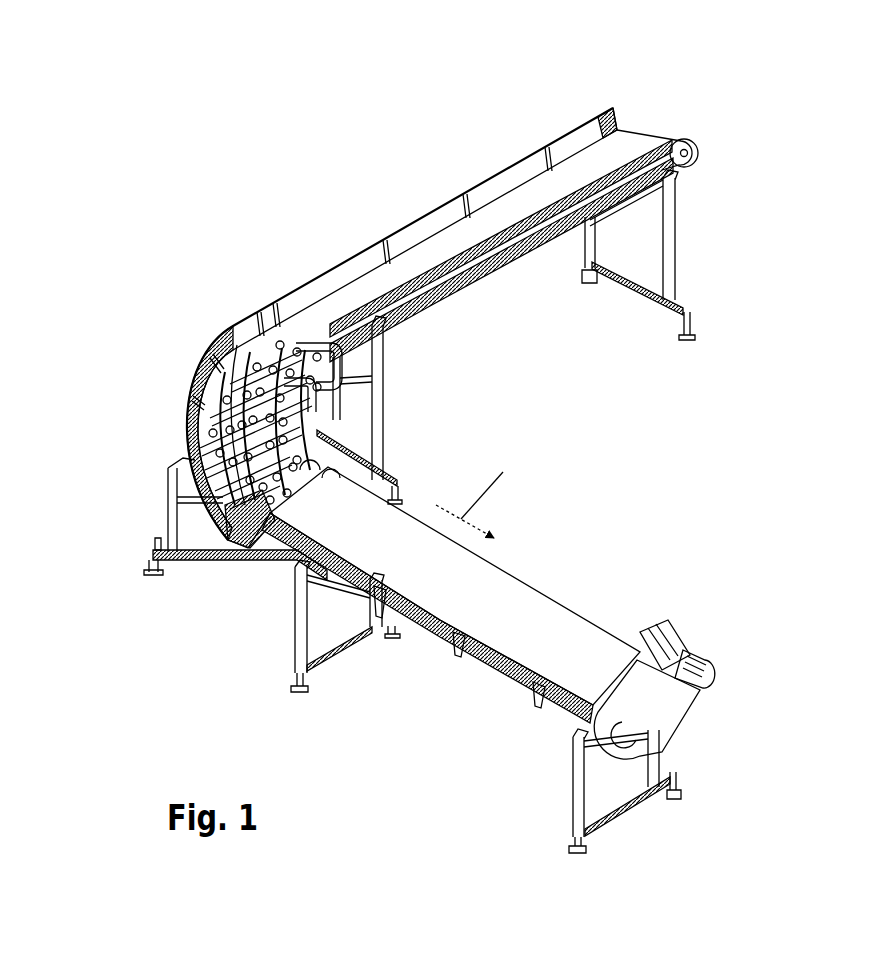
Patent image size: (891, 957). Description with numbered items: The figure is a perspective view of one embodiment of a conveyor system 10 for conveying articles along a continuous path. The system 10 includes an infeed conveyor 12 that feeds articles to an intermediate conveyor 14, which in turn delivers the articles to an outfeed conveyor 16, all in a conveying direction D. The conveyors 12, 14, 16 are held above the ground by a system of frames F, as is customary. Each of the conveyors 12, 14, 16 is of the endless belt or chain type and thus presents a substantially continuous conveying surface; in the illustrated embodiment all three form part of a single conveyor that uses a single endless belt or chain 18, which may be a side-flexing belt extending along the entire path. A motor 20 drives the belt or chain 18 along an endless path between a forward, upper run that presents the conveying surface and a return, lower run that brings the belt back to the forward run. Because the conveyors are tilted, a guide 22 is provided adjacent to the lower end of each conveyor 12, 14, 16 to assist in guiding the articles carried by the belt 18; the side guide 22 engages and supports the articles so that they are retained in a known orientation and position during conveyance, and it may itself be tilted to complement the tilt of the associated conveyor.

The conveyor system 10 is at (467, 460).
The infeed conveyor 12 is at (443, 190).
The intermediate conveyor 14 is at (402, 427).
The outfeed conveyor 16 is at (545, 578).
The endless belt or chain 18 is at (593, 630).
The motor 20 is at (683, 633).
The guide 22 is at (183, 390).
The frames F is at (385, 382).
The conveying direction D is at (486, 490).